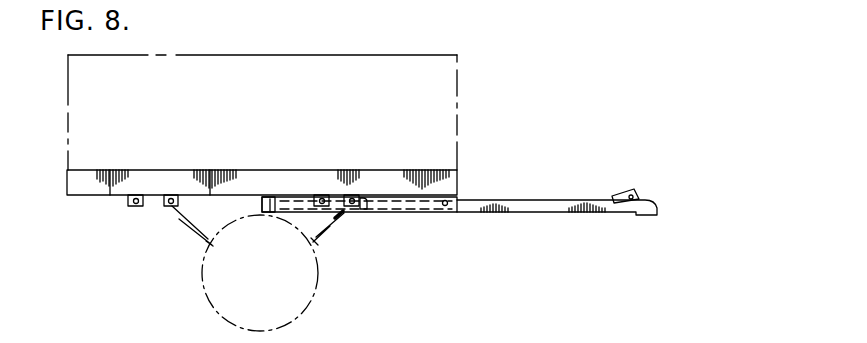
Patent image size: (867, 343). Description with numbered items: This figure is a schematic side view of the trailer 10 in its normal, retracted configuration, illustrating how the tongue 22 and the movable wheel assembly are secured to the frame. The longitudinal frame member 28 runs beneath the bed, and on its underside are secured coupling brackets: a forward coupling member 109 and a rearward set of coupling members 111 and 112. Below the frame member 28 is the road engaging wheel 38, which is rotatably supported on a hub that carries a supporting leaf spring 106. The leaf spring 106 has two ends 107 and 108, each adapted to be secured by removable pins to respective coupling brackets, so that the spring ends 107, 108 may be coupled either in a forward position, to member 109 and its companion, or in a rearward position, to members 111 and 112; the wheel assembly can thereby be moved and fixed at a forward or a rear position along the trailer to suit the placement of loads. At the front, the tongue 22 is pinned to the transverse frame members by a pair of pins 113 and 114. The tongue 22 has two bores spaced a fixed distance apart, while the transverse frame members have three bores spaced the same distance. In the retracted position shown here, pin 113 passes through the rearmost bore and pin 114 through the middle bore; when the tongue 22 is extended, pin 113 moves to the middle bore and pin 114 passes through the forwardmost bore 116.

The trailer 10 is at (478, 92).
The tongue 22 is at (573, 200).
The longitudinal frame member 28 is at (86, 186).
The wheel 38 is at (316, 299).
The leaf spring 106 is at (333, 231).
The end of leaf spring 107 is at (183, 226).
The end of leaf spring 108 is at (341, 216).
The coupling bracket 109 is at (166, 207).
The coupling member 111 is at (137, 195).
The coupling member 112 is at (320, 195).
The pin 113 is at (265, 196).
The pin 114 is at (362, 196).
The forwardmost bore 116 is at (448, 202).